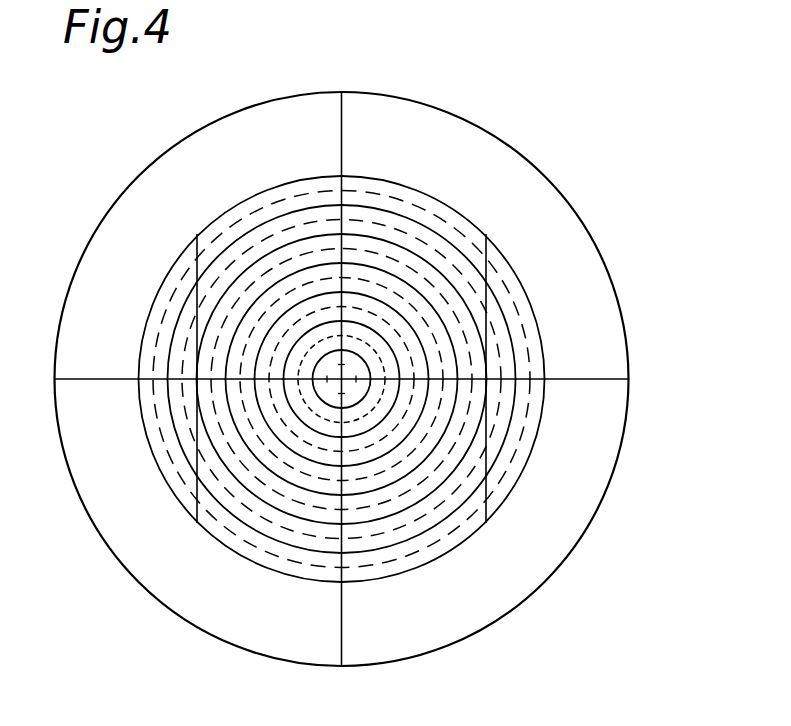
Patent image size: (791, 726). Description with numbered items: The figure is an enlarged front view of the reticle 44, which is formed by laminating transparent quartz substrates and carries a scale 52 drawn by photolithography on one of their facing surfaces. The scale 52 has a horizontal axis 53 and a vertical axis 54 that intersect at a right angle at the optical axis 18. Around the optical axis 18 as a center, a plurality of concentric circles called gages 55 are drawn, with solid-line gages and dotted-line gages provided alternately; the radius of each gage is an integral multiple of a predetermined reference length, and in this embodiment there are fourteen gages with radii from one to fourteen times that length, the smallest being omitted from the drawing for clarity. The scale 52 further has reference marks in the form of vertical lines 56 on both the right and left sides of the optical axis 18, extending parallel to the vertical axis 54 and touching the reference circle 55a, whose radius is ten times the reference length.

The reticle 44 is at (150, 155).
The scale 52 is at (466, 213).
The horizontal axis 53 is at (607, 379).
The vertical axis 54 is at (343, 150).
The gages 55 is at (527, 295).
The reference circle 55a is at (395, 515).
The vertical lines 56 is at (197, 487).
The optical axis 18 is at (342, 379).